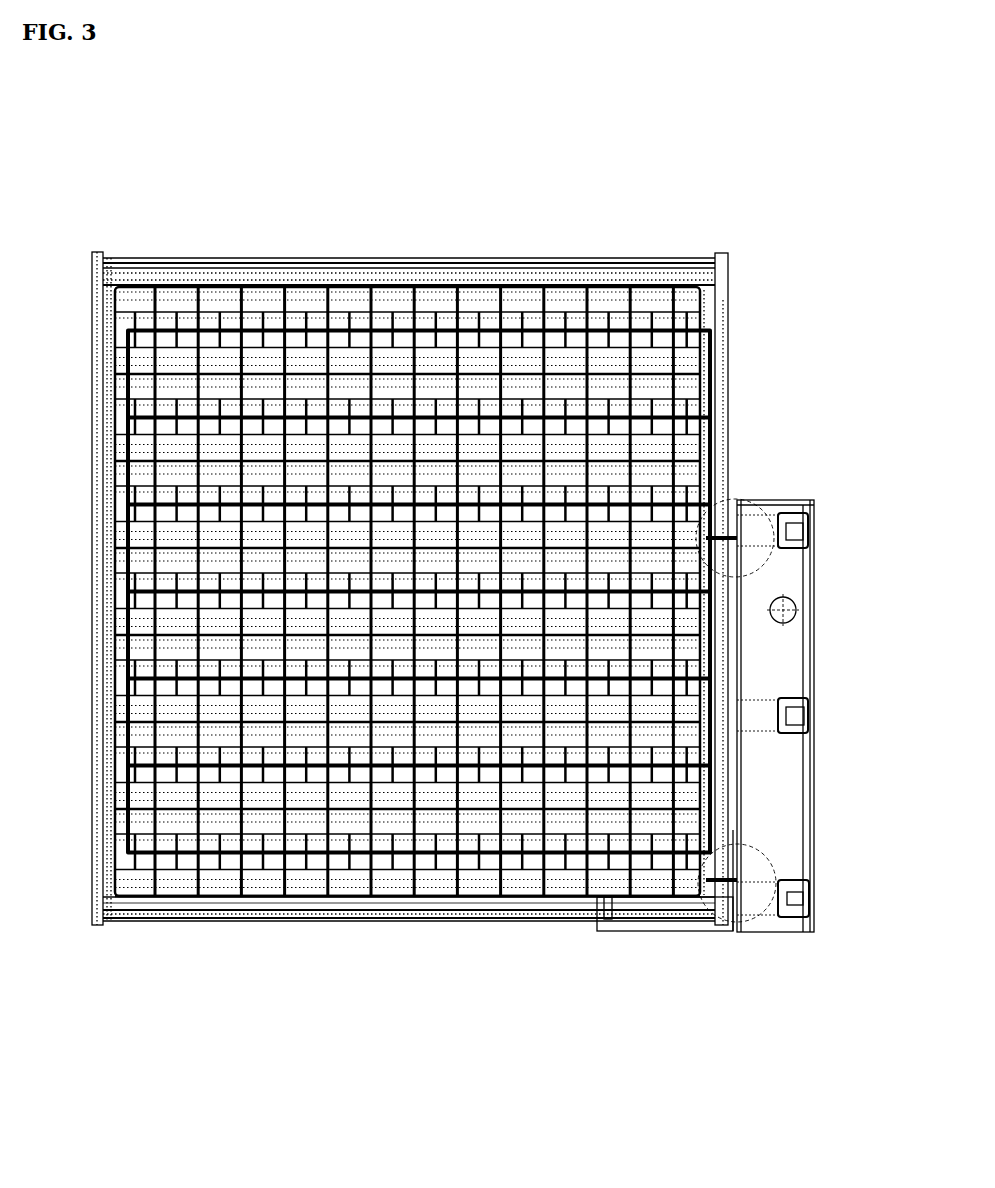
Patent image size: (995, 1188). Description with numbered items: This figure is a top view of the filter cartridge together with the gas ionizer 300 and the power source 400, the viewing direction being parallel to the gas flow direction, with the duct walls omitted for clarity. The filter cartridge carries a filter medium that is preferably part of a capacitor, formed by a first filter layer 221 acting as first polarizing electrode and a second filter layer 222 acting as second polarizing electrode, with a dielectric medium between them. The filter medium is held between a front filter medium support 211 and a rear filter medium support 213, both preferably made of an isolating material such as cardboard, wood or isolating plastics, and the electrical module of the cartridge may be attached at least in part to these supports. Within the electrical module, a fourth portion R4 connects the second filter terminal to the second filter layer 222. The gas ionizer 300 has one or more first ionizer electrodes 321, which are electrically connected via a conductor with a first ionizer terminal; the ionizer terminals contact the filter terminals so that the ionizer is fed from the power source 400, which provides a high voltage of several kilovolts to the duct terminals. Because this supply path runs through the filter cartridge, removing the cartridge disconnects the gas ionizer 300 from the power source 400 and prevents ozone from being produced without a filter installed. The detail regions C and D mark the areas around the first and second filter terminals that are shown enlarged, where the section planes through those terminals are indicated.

The front filter medium support 211 is at (101, 254).
The rear filter medium support 213 is at (725, 252).
The first filter layer 221 is at (172, 905).
The second filter layer 222 is at (431, 921).
The gas ionizer 300 is at (436, 283).
The first ionizer electrodes 321 is at (227, 300).
The power source 400 is at (773, 583).
The fourth portion of the electrical module R4 is at (668, 930).
The detail C is at (749, 501).
The detail D is at (769, 924).